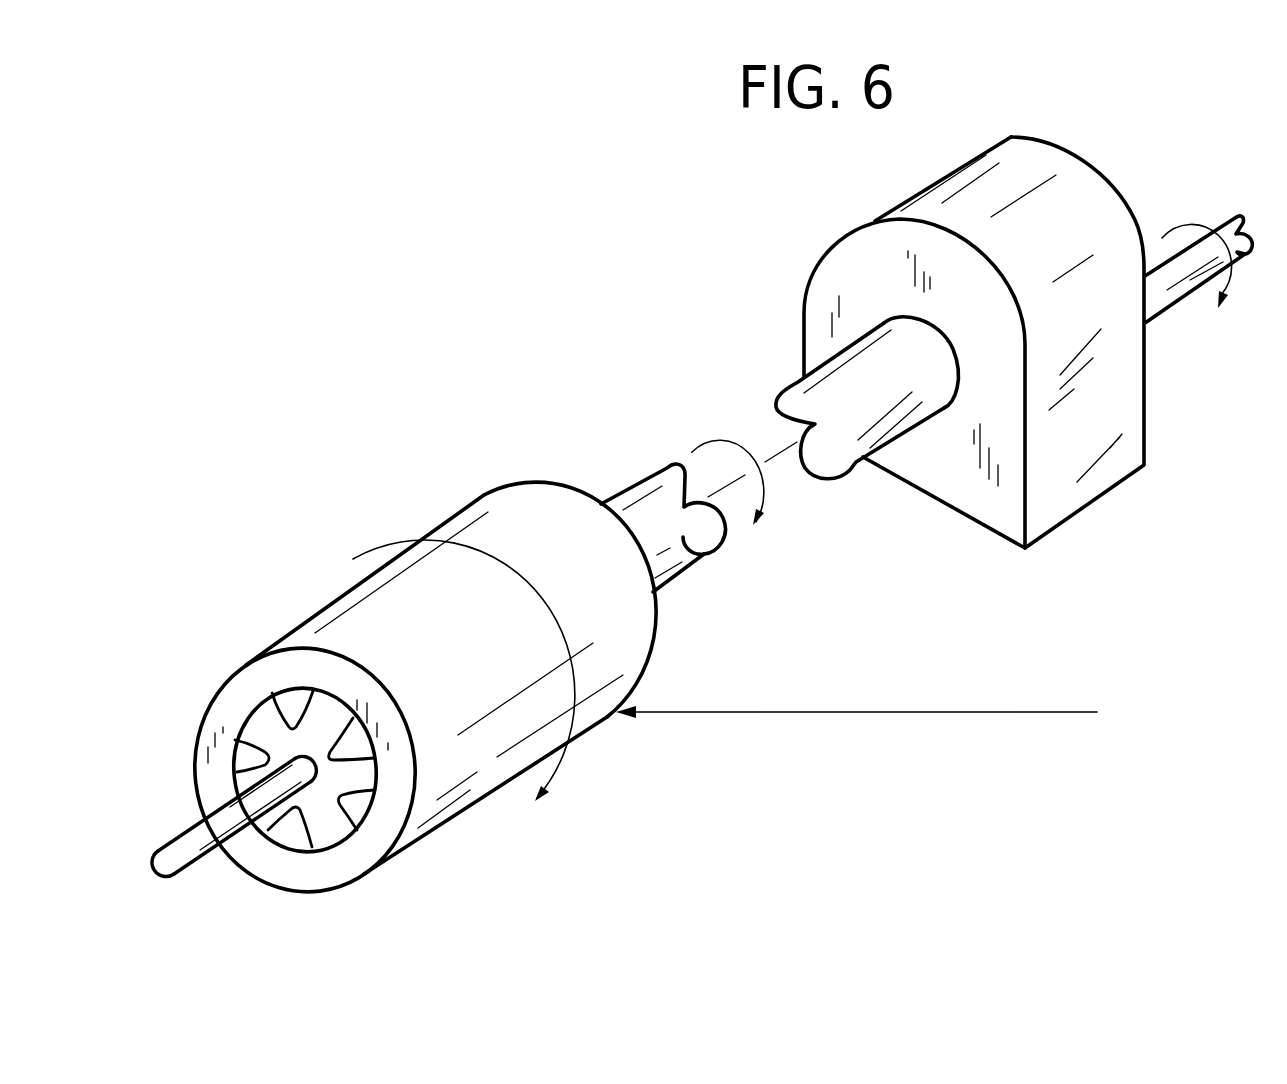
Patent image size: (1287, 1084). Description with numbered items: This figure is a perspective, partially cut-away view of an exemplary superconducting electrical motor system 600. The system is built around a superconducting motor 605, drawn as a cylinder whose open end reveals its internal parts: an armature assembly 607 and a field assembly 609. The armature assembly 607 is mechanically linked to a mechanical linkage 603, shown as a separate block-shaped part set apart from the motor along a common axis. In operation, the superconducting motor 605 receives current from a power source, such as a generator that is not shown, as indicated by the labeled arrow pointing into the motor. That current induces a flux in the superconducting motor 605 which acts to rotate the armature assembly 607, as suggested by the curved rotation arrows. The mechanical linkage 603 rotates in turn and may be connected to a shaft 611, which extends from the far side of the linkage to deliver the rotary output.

The superconducting electrical motor system 600 is at (439, 270).
The mechanical linkage 603 is at (1077, 420).
The superconducting motor 605 is at (242, 620).
The armature assembly 607 is at (487, 767).
The field assembly 609 is at (327, 838).
The shaft 611 is at (1165, 280).